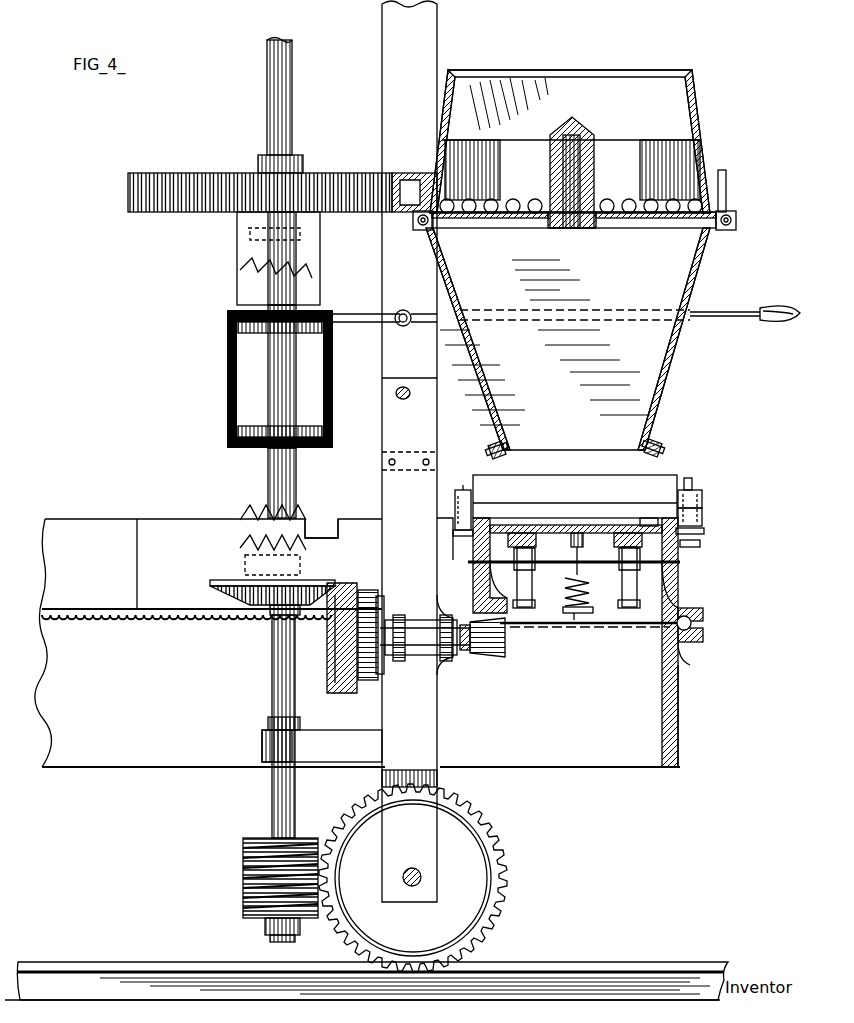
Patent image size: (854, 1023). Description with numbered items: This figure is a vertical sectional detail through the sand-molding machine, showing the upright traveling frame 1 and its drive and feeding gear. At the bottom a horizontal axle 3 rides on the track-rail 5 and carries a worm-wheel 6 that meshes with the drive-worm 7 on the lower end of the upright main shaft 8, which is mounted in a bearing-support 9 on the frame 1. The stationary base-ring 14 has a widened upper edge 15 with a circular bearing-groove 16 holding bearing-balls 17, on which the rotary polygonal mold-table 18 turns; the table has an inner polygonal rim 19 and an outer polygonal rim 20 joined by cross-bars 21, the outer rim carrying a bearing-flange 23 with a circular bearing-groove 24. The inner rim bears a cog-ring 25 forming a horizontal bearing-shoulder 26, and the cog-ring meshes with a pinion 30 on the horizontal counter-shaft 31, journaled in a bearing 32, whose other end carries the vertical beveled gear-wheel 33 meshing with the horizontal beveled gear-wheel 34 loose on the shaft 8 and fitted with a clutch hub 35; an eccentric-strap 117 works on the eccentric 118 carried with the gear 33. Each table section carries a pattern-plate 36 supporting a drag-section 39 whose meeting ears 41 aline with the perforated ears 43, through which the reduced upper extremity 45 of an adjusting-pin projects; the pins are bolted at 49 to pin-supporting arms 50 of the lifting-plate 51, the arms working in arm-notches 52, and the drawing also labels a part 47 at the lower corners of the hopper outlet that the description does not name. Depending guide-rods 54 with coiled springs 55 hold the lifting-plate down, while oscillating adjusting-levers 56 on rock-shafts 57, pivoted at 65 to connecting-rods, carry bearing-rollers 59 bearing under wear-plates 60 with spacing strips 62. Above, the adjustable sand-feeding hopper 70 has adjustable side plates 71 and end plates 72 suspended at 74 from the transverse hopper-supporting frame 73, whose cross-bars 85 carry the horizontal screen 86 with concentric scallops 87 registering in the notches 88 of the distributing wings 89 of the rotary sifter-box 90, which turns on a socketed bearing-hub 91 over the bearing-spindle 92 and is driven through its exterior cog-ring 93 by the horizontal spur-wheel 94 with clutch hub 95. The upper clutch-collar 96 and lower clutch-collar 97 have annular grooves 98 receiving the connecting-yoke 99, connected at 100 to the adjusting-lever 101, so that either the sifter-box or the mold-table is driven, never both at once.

The upright traveling frame 1 is at (382, 258).
The horizontal axle 3 is at (422, 866).
The track-rail 5 is at (140, 955).
The worm-wheel 6 is at (506, 865).
The drive-worm 7 is at (243, 862).
The upright main shaft 8 is at (270, 124).
The bearing-support 9 is at (268, 744).
The stationary base-ring 14 is at (361, 737).
The widened upper edge 15 is at (704, 636).
The circular bearing-groove 16 is at (684, 656).
The bearing-balls 17 is at (690, 647).
The rotary polygonal mold-table 18 is at (208, 643).
The inner polygonal rim 19 is at (476, 585).
The outer polygonal rim 20 is at (680, 591).
The cross-bar 21 is at (500, 552).
The bearing-flange 23 is at (704, 612).
The circular bearing-groove 24 is at (692, 620).
The cog-ring 25 is at (150, 626).
The horizontal bearing-shoulder 26 is at (212, 600).
The pinion 30 is at (498, 654).
The horizontal counter-shaft 31 is at (465, 658).
The bearing 32 is at (420, 648).
The vertical beveled gear-wheel 33 is at (328, 650).
The horizontal beveled gear-wheel 34 is at (216, 588).
The clutch hub 35 is at (245, 560).
The pattern-plate 36 is at (541, 512).
The drag-section 39 is at (586, 471).
The meeting ears 41 is at (702, 498).
The perforated ears 43 is at (703, 514).
The reduced upper extremity 45 is at (692, 486).
The flap 47 is at (575, 456).
The bolted lower end 49 is at (492, 452).
The pin-supporting arm 50 is at (705, 532).
The lifting-plate 51 is at (612, 525).
The arm-notch 52 is at (332, 528).
The depending guide-rod 54 is at (586, 602).
The coiled spring 55 is at (566, 606).
The oscillating adjusting-lever 56 is at (569, 577).
The rock-shaft 57 is at (682, 565).
The bearing-roller 59 is at (525, 532).
The wear-plate 60 is at (632, 532).
The spacing strip 62 is at (642, 518).
The pivotal connection 65 is at (586, 595).
The adjustable sand-feeding hopper 70 is at (570, 195).
The adjustable side plate 71 is at (578, 339).
The adjustable end plate 72 is at (545, 342).
The transverse hopper-supporting frame 73 is at (736, 213).
The pivotal suspension 74 is at (737, 221).
The cross-bars 85 is at (533, 228).
The horizontal screen 86 is at (624, 228).
The concentric scallops 87 is at (652, 202).
The notches 88 is at (544, 197).
The distributing wings 89 is at (571, 170).
The rotary sifter-box 90 is at (604, 80).
The socketed bearing-hub 91 is at (581, 130).
The bearing-spindle 92 is at (513, 106).
The exterior cog-ring 93 is at (727, 185).
The horizontal spur-wheel 94 is at (332, 182).
The clutch hub 95 is at (238, 226).
The upper clutch-collar 96 is at (238, 285).
The lower clutch-collar 97 is at (250, 474).
The annular groove 98 is at (259, 332).
The connecting-yoke 99 is at (227, 376).
The yoke connection 100 is at (336, 326).
The adjusting-lever 101 is at (405, 310).
The eccentric-strap 117 is at (370, 588).
The eccentric 118 is at (380, 602).